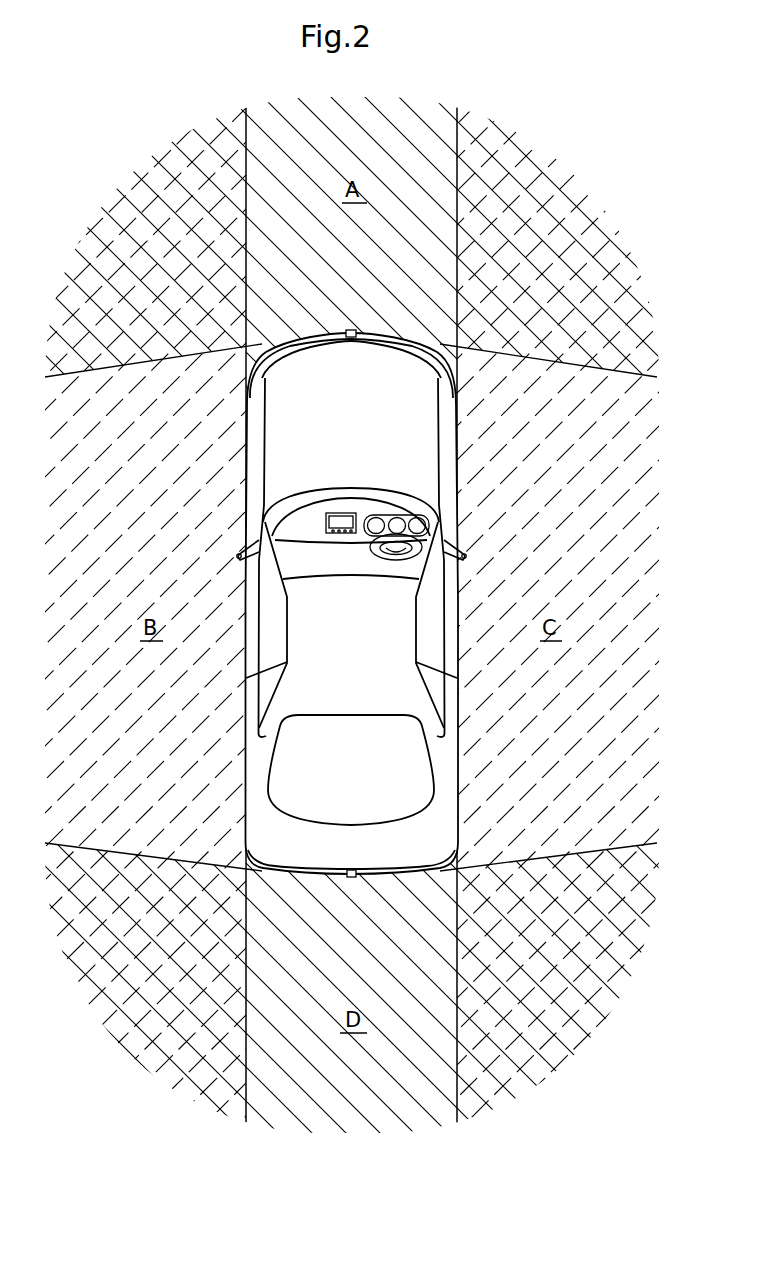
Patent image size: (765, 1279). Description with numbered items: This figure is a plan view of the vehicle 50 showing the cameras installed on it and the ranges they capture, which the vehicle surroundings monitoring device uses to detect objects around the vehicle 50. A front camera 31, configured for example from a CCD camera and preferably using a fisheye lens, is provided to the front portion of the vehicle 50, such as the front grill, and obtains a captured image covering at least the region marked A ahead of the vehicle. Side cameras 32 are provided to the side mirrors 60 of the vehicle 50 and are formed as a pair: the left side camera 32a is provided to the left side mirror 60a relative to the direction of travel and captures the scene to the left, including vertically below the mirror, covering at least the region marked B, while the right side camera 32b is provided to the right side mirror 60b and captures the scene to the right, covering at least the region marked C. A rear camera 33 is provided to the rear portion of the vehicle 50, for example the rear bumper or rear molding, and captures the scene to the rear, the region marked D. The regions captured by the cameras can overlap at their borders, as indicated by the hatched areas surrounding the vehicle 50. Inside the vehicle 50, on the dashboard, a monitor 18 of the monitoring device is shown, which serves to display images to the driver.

The vehicle 50 is at (473, 689).
The monitor 18 is at (342, 513).
The front camera 31 is at (352, 330).
The rear camera 33 is at (351, 878).
The side cameras 32 is at (356, 564).
The left side camera 32a is at (236, 557).
The right side camera 32b is at (467, 565).
The side mirrors 60 is at (352, 500).
The left side mirror 60a is at (238, 538).
The right side mirror 60b is at (462, 543).